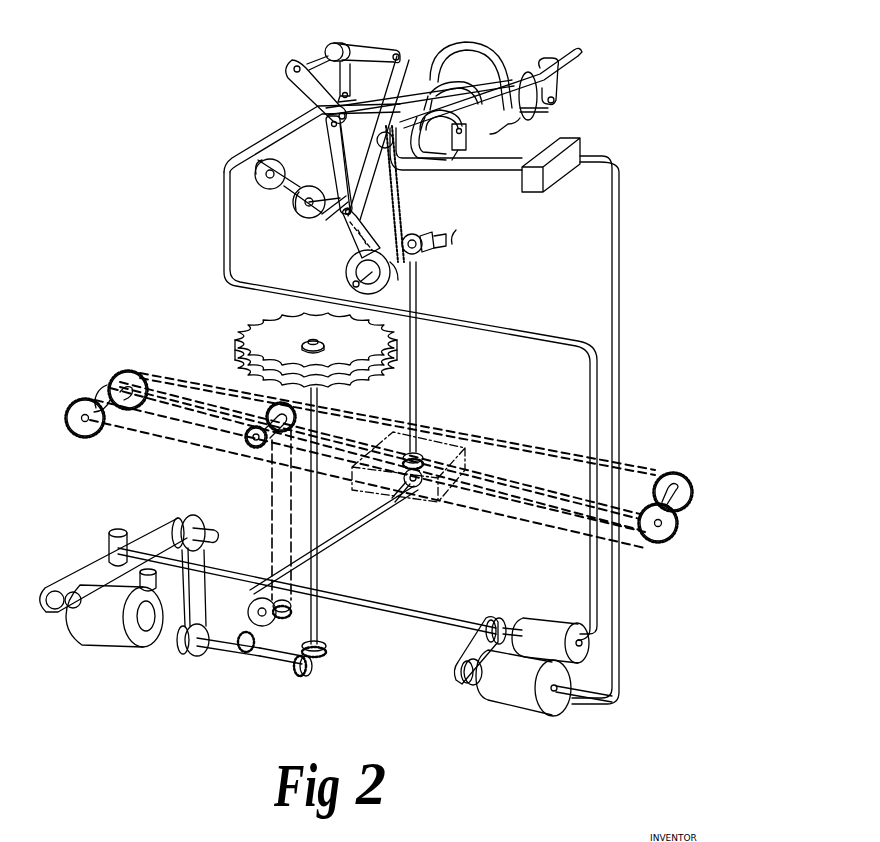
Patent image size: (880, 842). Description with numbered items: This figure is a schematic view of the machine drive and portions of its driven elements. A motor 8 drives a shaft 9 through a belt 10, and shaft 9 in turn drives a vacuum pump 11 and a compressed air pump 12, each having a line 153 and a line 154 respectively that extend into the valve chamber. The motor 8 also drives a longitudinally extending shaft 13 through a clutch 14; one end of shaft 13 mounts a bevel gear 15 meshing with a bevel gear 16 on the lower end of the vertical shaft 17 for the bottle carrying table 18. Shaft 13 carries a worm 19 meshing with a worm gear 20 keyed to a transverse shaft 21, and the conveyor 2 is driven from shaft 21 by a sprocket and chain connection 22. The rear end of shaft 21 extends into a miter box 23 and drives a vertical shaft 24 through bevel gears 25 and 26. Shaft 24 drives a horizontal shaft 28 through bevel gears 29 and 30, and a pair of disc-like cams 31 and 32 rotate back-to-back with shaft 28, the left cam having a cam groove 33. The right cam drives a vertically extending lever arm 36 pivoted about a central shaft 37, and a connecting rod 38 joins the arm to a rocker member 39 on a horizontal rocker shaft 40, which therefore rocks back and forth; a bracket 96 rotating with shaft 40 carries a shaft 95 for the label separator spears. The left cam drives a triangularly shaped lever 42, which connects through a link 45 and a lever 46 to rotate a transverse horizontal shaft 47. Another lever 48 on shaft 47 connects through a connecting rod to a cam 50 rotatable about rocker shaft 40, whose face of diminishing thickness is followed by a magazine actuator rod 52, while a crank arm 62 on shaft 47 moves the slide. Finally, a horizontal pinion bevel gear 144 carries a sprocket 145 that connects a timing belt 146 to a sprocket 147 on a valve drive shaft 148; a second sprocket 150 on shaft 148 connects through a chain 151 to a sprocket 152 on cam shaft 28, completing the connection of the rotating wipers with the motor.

The conveyor 2 is at (64, 420).
The motor 8 is at (110, 644).
The shaft 9 is at (432, 608).
The belt 10 is at (80, 568).
The vacuum pump 11 is at (534, 712).
The compressed air pump 12 is at (556, 628).
The longitudinally extending shaft 13 is at (440, 246).
The clutch 14 is at (200, 520).
The bevel gear 15 is at (308, 680).
The bevel gear 16 is at (330, 652).
The vertical shaft 17 is at (319, 518).
The bottle carrying table 18 is at (368, 378).
The worm 19 is at (252, 684).
The worm gear 20 is at (254, 612).
The transverse shaft 21 is at (360, 532).
The sprocket and chain connection 22 is at (268, 534).
The miter box 23 is at (436, 522).
The vertical shaft 24 is at (417, 380).
The bevel gear 25 is at (440, 492).
The bevel gear 26 is at (424, 470).
The horizontal shaft 28 is at (372, 292).
The bevel gear 29 is at (418, 254).
The bevel gear 30 is at (420, 238).
The disc-like cam 31 is at (344, 272).
The disc-like cam 32 is at (412, 282).
The cam groove 33 is at (354, 284).
The lever arm 36 is at (336, 152).
The central shaft 37 is at (340, 206).
The connecting rod 38 is at (560, 106).
The rocker member 39 is at (562, 86).
The rocker shaft 40 is at (560, 60).
The triangularly shaped lever 42 is at (350, 240).
The link 45 is at (403, 56).
The lever 46 is at (394, 52).
The transverse horizontal shaft 47 is at (332, 46).
The lever 48 is at (345, 80).
The cam 50 is at (508, 74).
The magazine actuator rod 52 is at (550, 138).
The crank arm 62 is at (304, 90).
The shaft 95 is at (435, 135).
The bracket 96 is at (466, 135).
The horizontal pinion bevel gear 144 is at (262, 182).
The sprocket 145 is at (262, 166).
The timing belt 146 is at (278, 196).
The sprocket 147 is at (310, 212).
The valve drive shaft 148 is at (295, 214).
The sprocket 150 is at (383, 194).
The chain 151 is at (402, 194).
The sprocket 152 is at (404, 216).
The line 153 is at (470, 85).
The line 154 is at (590, 406).